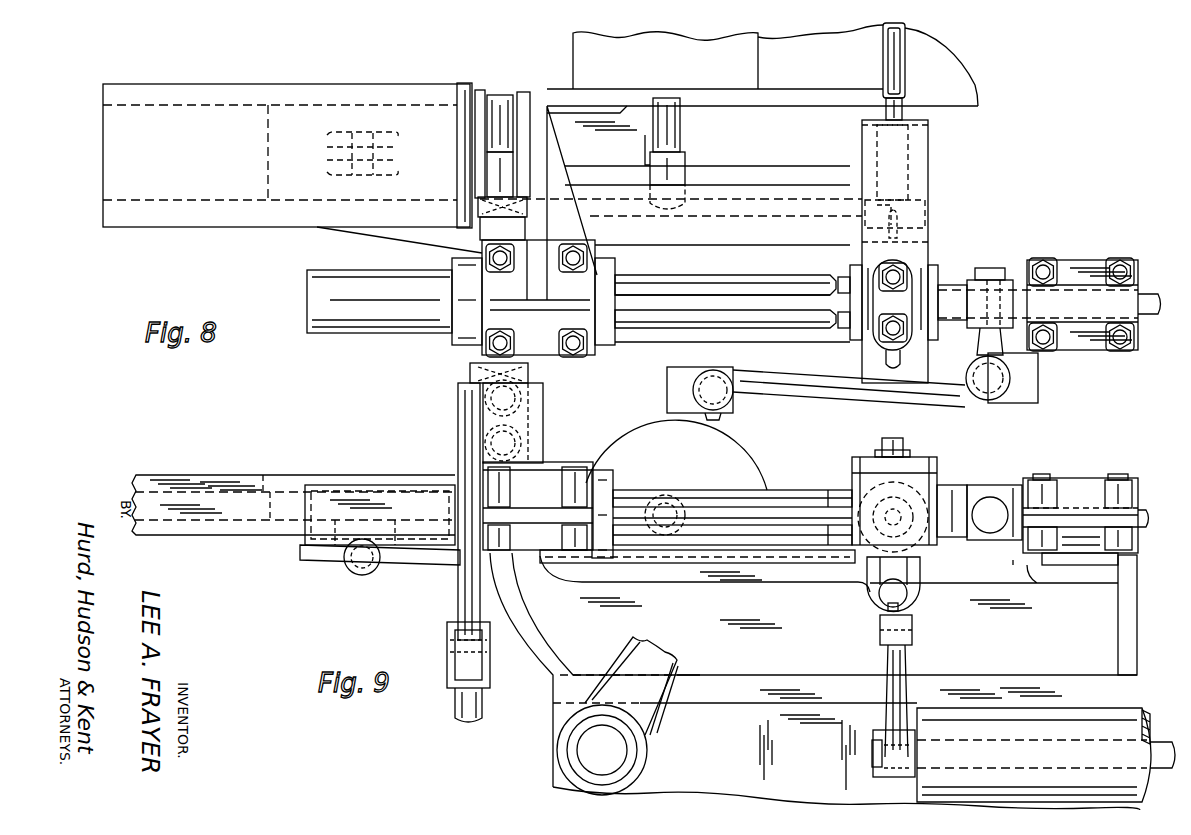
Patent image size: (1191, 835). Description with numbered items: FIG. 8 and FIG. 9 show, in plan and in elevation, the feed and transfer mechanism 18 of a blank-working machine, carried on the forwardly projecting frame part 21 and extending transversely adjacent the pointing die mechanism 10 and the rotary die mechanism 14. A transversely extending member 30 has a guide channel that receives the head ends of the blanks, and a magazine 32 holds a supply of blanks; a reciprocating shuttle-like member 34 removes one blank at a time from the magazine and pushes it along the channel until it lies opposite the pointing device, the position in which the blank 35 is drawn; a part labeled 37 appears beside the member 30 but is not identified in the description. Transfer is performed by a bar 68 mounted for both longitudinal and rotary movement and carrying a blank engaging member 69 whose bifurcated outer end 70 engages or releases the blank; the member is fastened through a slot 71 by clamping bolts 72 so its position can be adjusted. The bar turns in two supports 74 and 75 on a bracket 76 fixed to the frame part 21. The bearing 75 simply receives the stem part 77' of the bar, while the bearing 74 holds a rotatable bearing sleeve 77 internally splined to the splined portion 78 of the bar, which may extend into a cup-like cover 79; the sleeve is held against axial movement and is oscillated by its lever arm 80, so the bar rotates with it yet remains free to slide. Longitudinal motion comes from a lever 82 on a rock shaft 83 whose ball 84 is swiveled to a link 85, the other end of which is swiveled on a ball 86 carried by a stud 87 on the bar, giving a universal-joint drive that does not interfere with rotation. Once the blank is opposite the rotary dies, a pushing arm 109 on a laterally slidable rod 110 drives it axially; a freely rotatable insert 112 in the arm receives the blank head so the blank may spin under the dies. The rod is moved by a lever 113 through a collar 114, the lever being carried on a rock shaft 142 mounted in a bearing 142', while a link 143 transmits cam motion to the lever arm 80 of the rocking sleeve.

In FIG. 8, the rotatable and shiftable die mechanism 10 is at (565, 68).
In FIG. 9, the rotatable and shiftable die mechanism 10 is at (747, 454).
In FIG. 8, the rotary die mechanism 14 is at (982, 115).
In FIG. 8, the feed and transfer mechanism 18 is at (637, 355).
In FIG. 9, the feed and transfer mechanism 18 is at (841, 483).
In FIG. 9, the forwardly projecting part of the frame 21 is at (670, 790).
In FIG. 8, the transversely extending member 30 is at (740, 247).
In FIG. 8, the magazine 32 is at (484, 94).
In FIG. 9, the magazine 32 is at (471, 376).
In FIG. 8, the reciprocating shuttle-like member 34 is at (404, 105).
In FIG. 9, the reciprocating shuttle-like member 34 is at (262, 490).
In FIG. 8, the blank 35 is at (681, 135).
In FIG. 9, the blank 35 is at (674, 498).
In FIG. 8, the slot 37 is at (812, 215).
In FIG. 8, the bar 68 is at (952, 265).
In FIG. 9, the bar 68 is at (944, 488).
In FIG. 8, the blank engaging member 69 is at (928, 166).
In FIG. 9, the blank engaging member 69 is at (920, 463).
In FIG. 8, the bifurcated outer end 70 is at (928, 125).
In FIG. 8, the slot 71 is at (912, 236).
In FIG. 8, the clamping screws or bolts 72 is at (893, 328).
In FIG. 9, the clamping screws or bolts 72 is at (905, 446).
In FIG. 8, the support (bearing) 74 is at (554, 345).
In FIG. 9, the support (bearing) 74 is at (547, 463).
In FIG. 8, the support (bearing) 75 is at (1066, 262).
In FIG. 9, the support (bearing) 75 is at (1110, 485).
In FIG. 9, the bracket 76 is at (1136, 655).
In FIG. 9, the rotatable bearing sleeve 77 is at (596, 491).
In FIG. 8, the stem part 77' is at (1058, 320).
In FIG. 9, the stem part 77' is at (1141, 490).
In FIG. 8, the splined portion 78 is at (797, 318).
In FIG. 9, the splined portion 78 is at (760, 490).
In FIG. 8, the cup-like cover 79 is at (420, 333).
In FIG. 9, the cup-like cover 79 is at (340, 468).
In FIG. 9, the lever arm 80 is at (462, 605).
In FIG. 8, the lever 82 is at (720, 413).
In FIG. 9, the lever 82 is at (672, 668).
In FIG. 9, the rock shaft 83 is at (594, 760).
In FIG. 8, the ball 84 is at (728, 370).
In FIG. 8, the link 85 is at (836, 400).
In FIG. 8, the ball 86 is at (975, 396).
In FIG. 9, the ball 86 is at (990, 500).
In FIG. 8, the stud 87 is at (991, 268).
In FIG. 8, the arm 109 is at (920, 213).
In FIG. 9, the laterally slidable rod 110 is at (897, 595).
In FIG. 8, the insert 112 is at (922, 190).
In FIG. 9, the lever 113 is at (904, 660).
In FIG. 9, the collar 114 is at (866, 592).
In FIG. 9, the rock shaft 142 is at (1048, 749).
In FIG. 9, the bearing 142' is at (1158, 710).
In FIG. 9, the link 143 is at (452, 691).